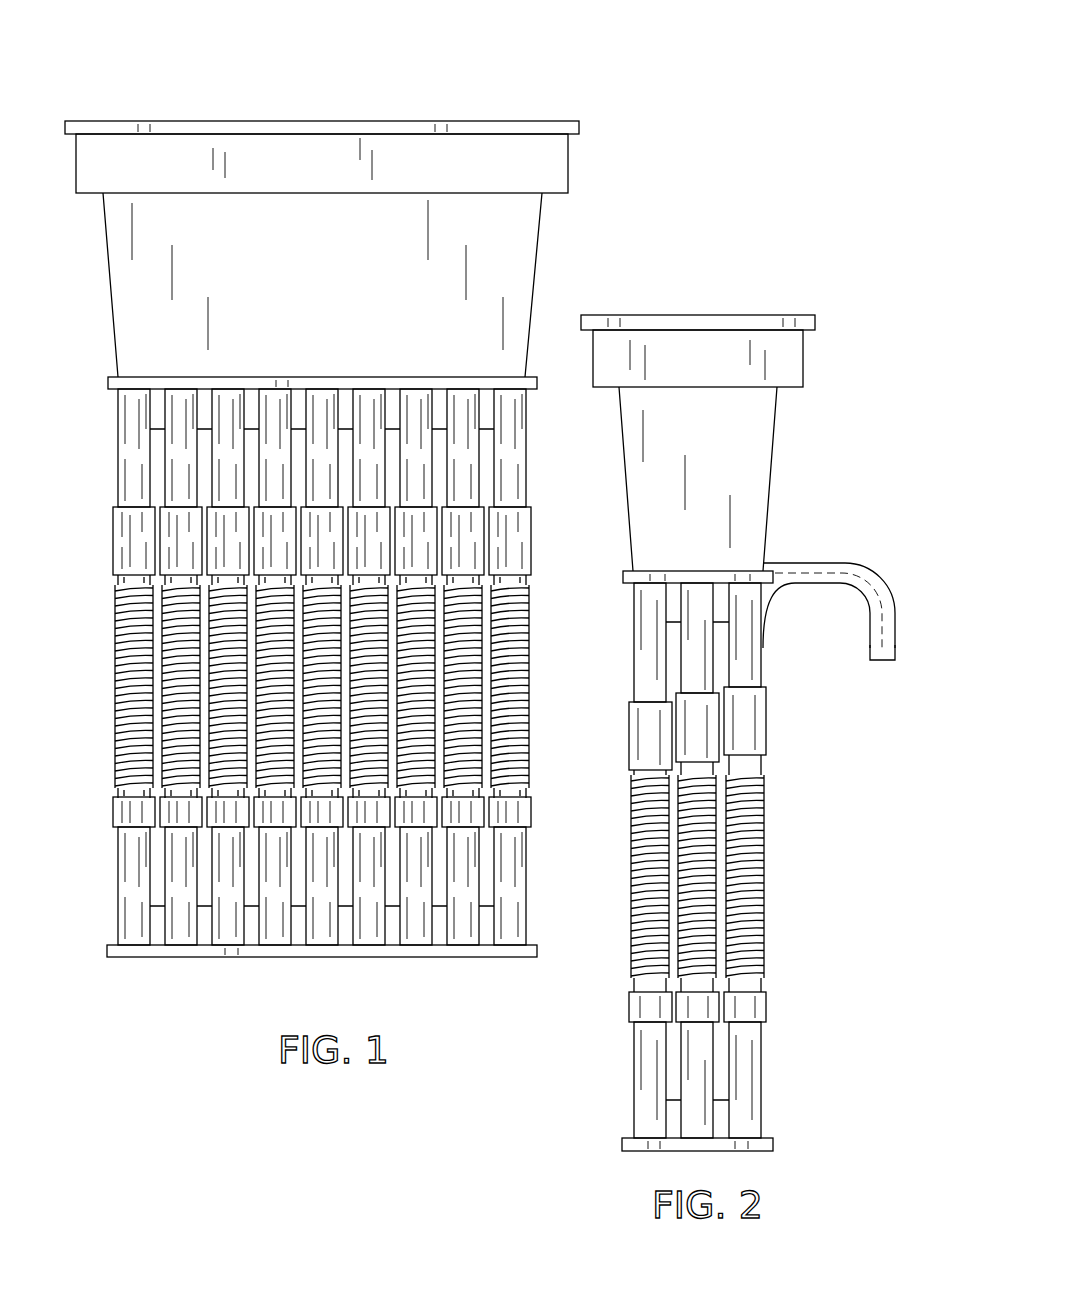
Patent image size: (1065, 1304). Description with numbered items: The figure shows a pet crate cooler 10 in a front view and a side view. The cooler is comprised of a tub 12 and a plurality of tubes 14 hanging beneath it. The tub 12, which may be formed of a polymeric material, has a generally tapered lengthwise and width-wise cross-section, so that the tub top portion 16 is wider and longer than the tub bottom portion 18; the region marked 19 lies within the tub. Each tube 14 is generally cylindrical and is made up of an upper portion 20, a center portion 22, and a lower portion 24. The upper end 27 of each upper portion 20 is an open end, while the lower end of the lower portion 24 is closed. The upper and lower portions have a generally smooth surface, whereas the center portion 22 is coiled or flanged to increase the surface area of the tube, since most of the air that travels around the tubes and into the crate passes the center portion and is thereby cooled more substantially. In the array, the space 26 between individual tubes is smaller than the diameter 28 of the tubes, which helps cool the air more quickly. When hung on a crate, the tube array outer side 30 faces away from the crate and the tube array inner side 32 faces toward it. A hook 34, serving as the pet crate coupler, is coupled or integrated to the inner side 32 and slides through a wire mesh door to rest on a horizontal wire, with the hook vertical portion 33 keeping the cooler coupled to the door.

In FIG. 1, the pet crate cooler 10 is at (247, 50).
In FIG. 2, the pet crate cooler 10 is at (724, 246).
In FIG. 1, the tub 12 is at (568, 282).
In FIG. 1, the tubes 14 is at (542, 394).
In FIG. 1, the tub top portion 16 is at (60, 122).
In FIG. 1, the tub bottom portion 18 is at (78, 207).
In FIG. 1, the interior chamber 19 is at (285, 232).
In FIG. 1, the upper portion 20 is at (98, 393).
In FIG. 1, the center portion 22 is at (98, 580).
In FIG. 1, the lower portion 24 is at (98, 801).
In FIG. 1, the space 26 is at (158, 468).
In FIG. 2, the space 26 is at (720, 667).
In FIG. 1, the upper end 27 is at (292, 365).
In FIG. 1, the diameter 28 is at (300, 455).
In FIG. 2, the diameter 28 is at (580, 635).
In FIG. 2, the tube array outer side 30 is at (580, 1030).
In FIG. 2, the tube array inner side 32 is at (782, 915).
In FIG. 2, the hook vertical portion 33 is at (888, 652).
In FIG. 2, the hook 34 is at (890, 575).